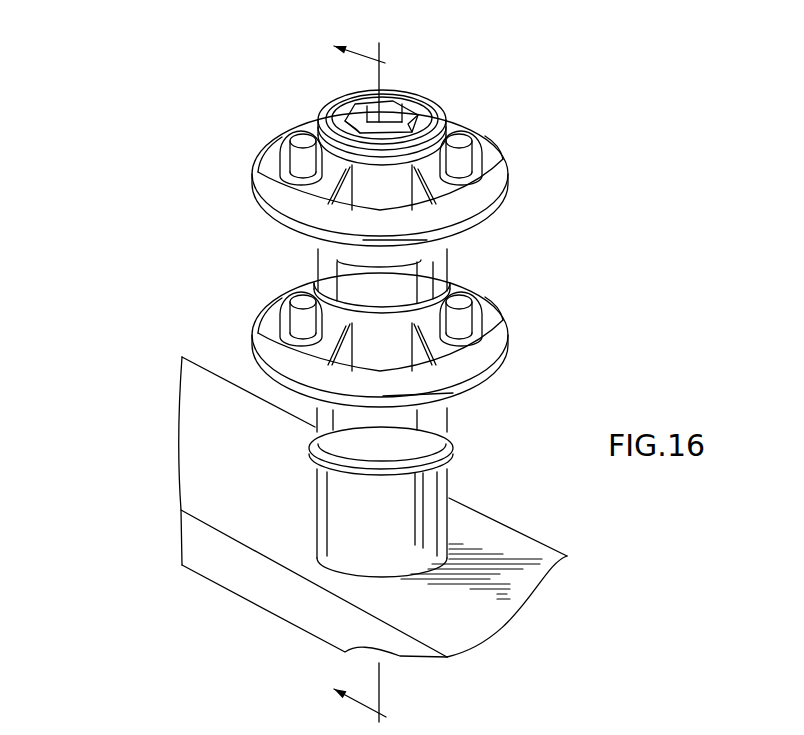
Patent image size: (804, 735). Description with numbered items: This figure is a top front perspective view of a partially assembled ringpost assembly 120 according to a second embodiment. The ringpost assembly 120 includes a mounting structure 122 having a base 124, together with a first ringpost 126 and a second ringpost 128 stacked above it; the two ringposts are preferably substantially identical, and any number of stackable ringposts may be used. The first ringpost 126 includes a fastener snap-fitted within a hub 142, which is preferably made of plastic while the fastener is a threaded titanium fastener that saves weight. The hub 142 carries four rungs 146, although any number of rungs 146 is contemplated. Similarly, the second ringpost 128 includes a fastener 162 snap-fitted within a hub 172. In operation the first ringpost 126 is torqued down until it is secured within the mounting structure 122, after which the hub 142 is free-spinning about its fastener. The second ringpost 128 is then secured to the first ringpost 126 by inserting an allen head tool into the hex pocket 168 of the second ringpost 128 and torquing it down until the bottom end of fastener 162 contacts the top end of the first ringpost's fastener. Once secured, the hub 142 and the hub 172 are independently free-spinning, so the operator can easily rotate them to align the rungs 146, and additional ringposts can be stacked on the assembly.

The ringpost assembly 120 is at (207, 225).
The mounting structure 122 is at (248, 465).
The base 124 is at (433, 488).
The first ringpost 126 is at (263, 335).
The second ringpost 128 is at (282, 132).
The hub 142 is at (500, 327).
The rungs 146 is at (310, 296).
The fastener 162 is at (410, 102).
The hex pocket 168 is at (347, 112).
The hub 172 is at (507, 170).